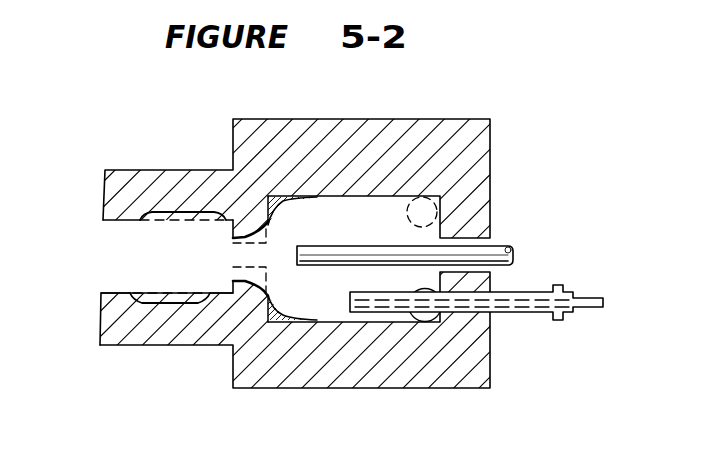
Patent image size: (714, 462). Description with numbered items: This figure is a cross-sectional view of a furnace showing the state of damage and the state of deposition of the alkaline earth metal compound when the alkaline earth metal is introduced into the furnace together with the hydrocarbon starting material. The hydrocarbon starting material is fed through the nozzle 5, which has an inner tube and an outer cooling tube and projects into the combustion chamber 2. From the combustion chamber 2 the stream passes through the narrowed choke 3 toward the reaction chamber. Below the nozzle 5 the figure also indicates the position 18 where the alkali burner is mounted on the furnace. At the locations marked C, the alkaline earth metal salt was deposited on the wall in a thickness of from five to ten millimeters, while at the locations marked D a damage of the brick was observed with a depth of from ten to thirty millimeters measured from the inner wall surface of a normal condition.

The combustion chamber 2 is at (356, 217).
The choke 3 is at (245, 254).
The nozzle for supplying the hydrocarbon starting material 5 is at (500, 244).
The state where the alkali burner is mounted 18 is at (568, 321).
The deposition of the alkaline earth metal salt C is at (271, 197).
The damage of the brick D is at (177, 218).